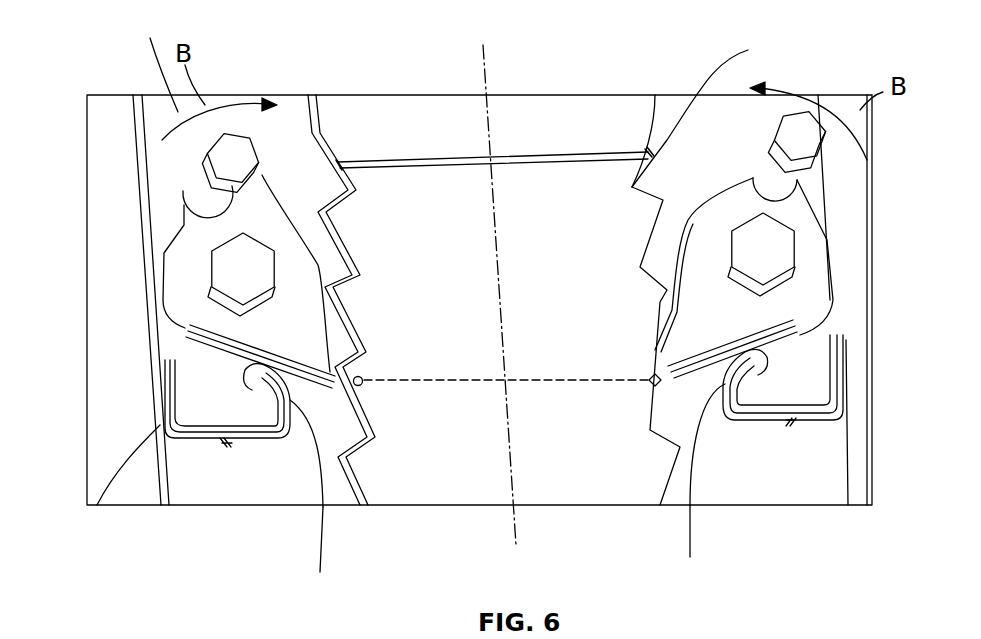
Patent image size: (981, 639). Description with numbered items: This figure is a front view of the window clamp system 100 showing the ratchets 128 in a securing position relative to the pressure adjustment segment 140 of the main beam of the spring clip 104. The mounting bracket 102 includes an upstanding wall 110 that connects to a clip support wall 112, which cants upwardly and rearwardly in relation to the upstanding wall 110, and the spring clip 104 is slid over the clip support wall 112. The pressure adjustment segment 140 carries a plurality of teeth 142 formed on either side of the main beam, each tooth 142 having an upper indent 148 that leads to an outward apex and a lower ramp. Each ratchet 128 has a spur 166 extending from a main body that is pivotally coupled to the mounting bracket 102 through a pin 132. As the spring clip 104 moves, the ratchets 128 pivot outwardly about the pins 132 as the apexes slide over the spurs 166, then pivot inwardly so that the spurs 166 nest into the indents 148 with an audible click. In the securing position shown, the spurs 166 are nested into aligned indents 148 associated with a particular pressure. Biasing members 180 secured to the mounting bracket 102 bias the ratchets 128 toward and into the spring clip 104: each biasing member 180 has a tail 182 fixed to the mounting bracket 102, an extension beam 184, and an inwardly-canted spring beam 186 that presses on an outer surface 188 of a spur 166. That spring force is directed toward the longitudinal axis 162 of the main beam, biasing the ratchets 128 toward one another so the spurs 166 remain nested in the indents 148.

The window clamp system 100 is at (102, 44).
The mounting bracket 102 is at (140, 236).
The spring clip 104 is at (628, 80).
The upstanding wall 110 is at (458, 93).
The clip support wall 112 is at (153, 61).
The ratchet 128 is at (160, 298).
The pin 132 is at (243, 257).
The pressure adjustment segment 140 is at (712, 113).
The teeth 142 is at (332, 292).
The upper indent 148 is at (340, 362).
The longitudinal axis 162 is at (487, 78).
The spur 166 is at (328, 343).
The biasing member 180 is at (222, 443).
The tail 182 is at (157, 413).
The extension beam 184 is at (232, 443).
The spring beam 186 is at (509, 554).
The outer surface 188 is at (212, 336).